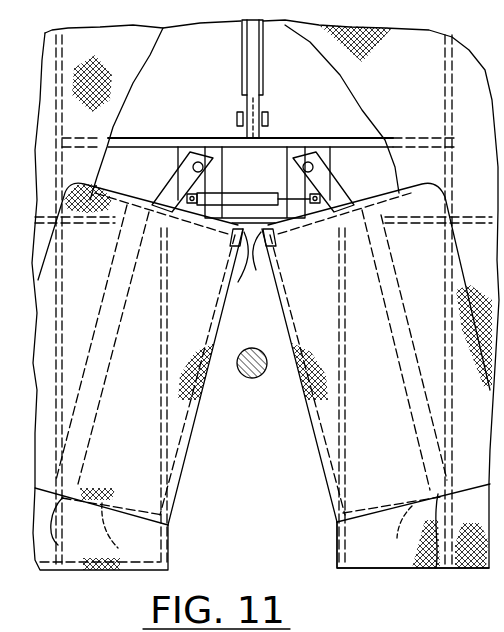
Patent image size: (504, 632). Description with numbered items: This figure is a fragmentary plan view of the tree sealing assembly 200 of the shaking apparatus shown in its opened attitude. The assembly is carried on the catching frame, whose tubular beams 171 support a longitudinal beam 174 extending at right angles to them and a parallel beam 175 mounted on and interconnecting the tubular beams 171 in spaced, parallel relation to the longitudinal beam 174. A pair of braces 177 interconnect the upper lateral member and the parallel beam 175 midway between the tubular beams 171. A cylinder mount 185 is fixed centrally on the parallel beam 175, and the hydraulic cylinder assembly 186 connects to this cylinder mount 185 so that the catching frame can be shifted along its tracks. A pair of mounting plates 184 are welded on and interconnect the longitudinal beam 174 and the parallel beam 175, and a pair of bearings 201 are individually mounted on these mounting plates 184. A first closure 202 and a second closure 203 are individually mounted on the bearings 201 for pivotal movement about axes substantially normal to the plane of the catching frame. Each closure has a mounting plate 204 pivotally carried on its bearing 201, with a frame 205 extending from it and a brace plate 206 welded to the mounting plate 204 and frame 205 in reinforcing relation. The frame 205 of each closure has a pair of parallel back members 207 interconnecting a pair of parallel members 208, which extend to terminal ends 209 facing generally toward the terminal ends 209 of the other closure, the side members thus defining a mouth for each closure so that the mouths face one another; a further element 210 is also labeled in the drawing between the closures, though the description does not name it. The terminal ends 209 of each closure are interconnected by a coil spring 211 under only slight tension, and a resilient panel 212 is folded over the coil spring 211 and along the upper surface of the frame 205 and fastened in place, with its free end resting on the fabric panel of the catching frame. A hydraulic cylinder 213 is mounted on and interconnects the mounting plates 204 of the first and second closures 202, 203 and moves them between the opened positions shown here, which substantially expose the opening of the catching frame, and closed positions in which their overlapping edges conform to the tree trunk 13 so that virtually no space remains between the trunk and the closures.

The tree trunk 13 is at (252, 379).
The tubular beams 171 is at (57, 163).
The longitudinal beam 174 is at (440, 236).
The parallel beam 175 is at (372, 140).
The braces 177 is at (250, 42).
The mounting plates 184 is at (178, 161).
The cylinder mount 185 is at (268, 118).
The hydraulic cylinder assembly 186 is at (262, 65).
The tree sealing assembly 200 is at (334, 526).
The bearings 201 is at (199, 160).
The first closure 202 is at (56, 543).
The second closure 203 is at (436, 566).
The mounting plate 204 is at (292, 162).
The frame 205 is at (105, 515).
The brace plate 206 is at (148, 254).
The back members 207 is at (72, 433).
The parallel members 208 is at (172, 236).
The terminal ends 209 is at (336, 522).
The plate inner edge 210 is at (300, 333).
The coil spring 211 is at (187, 453).
The resilient panel 212 is at (97, 256).
The hydraulic cylinder 213 is at (228, 196).